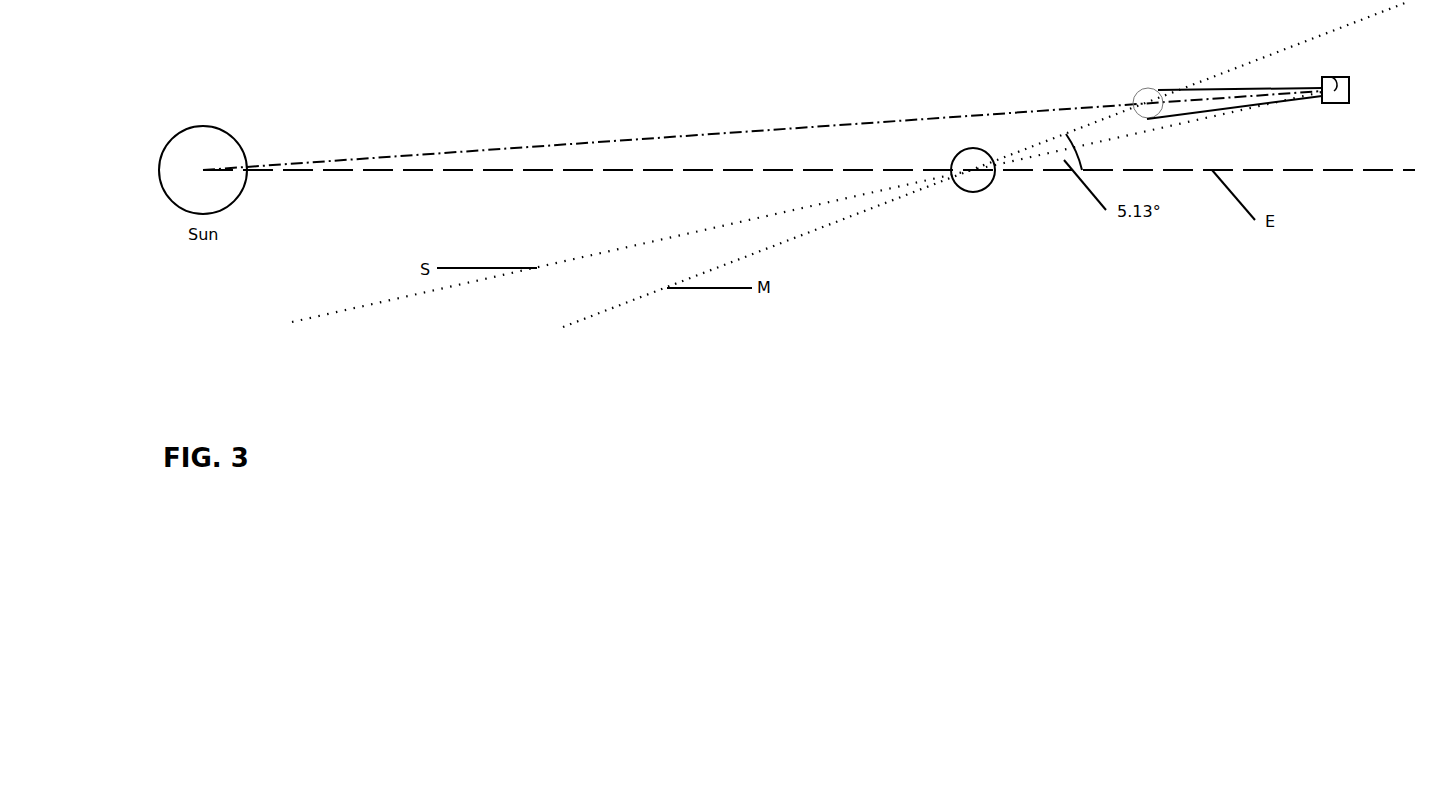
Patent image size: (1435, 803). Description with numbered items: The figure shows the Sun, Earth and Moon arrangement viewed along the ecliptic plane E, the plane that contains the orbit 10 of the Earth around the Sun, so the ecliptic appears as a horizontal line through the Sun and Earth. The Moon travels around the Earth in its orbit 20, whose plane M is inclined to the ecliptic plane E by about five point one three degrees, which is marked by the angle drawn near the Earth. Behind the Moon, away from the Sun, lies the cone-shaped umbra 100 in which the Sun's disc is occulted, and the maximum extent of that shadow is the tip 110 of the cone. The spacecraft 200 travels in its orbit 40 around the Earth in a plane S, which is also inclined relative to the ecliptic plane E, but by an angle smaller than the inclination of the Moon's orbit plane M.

The orbit of the Earth around the Sun 10 is at (960, 150).
The Moon's orbit 20 is at (1150, 103).
The spacecraft orbit 40 is at (1322, 78).
The umbra 100 is at (1188, 100).
The tip of the umbra cone 110 is at (1333, 87).
The spacecraft 200 is at (1349, 77).